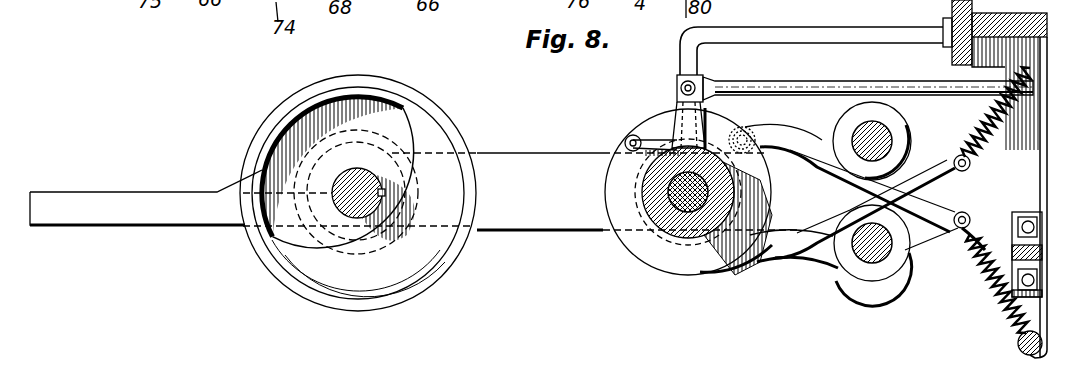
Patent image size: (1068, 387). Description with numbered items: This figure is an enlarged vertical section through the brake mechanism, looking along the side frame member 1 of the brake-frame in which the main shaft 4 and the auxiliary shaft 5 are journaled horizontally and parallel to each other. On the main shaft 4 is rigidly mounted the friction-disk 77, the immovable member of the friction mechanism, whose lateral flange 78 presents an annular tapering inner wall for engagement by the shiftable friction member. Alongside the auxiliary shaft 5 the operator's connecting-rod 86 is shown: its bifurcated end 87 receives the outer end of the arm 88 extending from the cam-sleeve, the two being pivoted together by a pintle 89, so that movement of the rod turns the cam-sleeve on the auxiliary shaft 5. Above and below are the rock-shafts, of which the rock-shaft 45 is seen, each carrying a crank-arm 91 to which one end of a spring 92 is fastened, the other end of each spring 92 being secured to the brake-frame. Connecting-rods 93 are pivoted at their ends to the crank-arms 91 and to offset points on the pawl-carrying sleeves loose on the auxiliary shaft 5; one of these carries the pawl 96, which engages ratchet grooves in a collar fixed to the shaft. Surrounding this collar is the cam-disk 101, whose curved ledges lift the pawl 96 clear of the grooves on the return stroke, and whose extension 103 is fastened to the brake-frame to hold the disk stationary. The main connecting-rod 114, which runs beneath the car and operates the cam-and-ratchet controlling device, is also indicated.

The side frame member 1 is at (533, 178).
The main shaft 4 is at (367, 183).
The auxiliary shaft 5 is at (750, 260).
The rock-shaft 45 is at (860, 257).
The friction-disk 77 is at (313, 125).
The lateral flange 78 is at (377, 88).
The connecting-rod 86 is at (780, 85).
The bifurcated end 87 is at (681, 82).
The arm 88 is at (687, 110).
The pintle 89 is at (675, 82).
The crank-arm 91 is at (927, 153).
The spring 92 is at (967, 143).
The connecting-rod 93 is at (785, 135).
The pawl 96 is at (718, 150).
The cam-disk 101 is at (640, 200).
The extension 103 is at (827, 38).
The main connecting-rod 114 is at (873, 128).